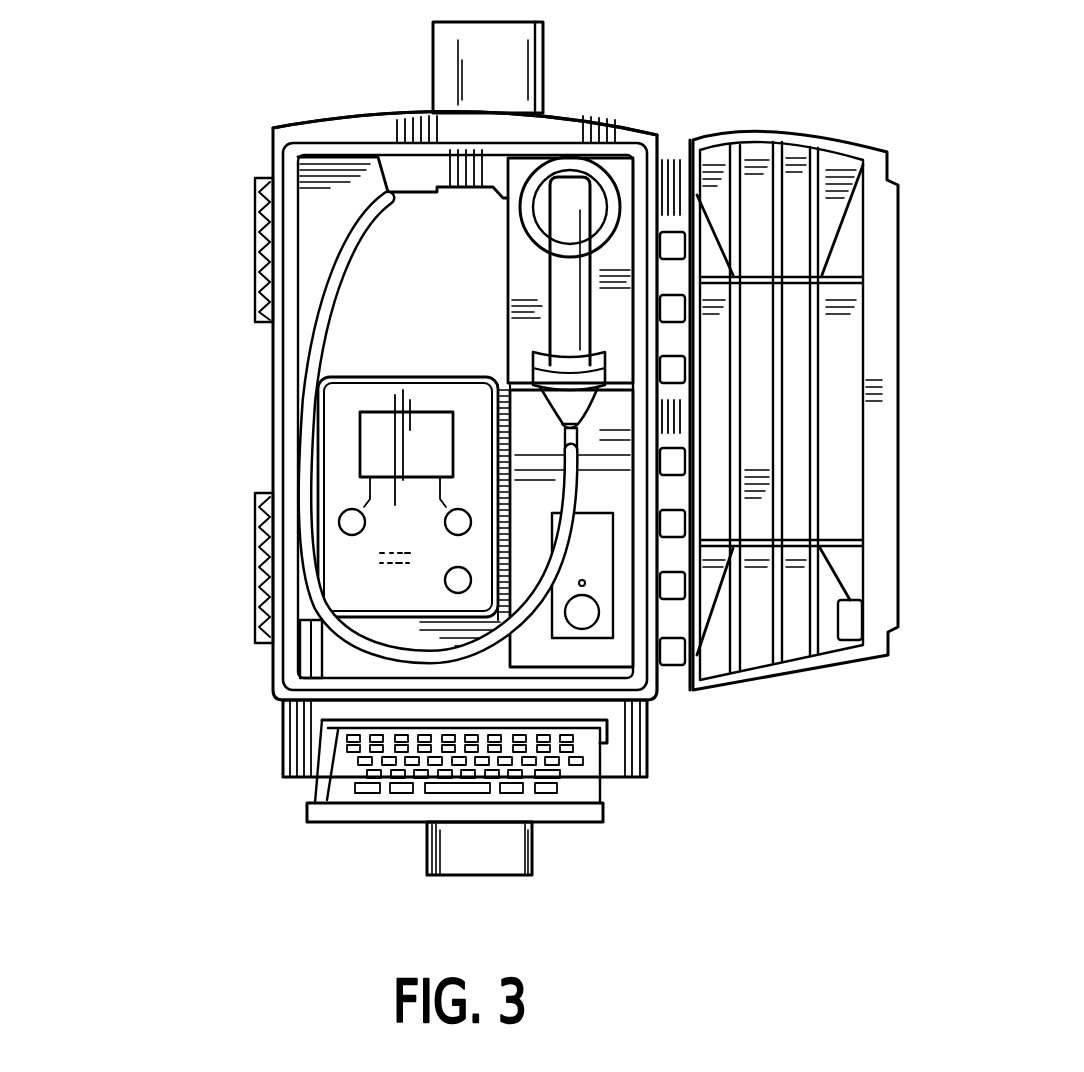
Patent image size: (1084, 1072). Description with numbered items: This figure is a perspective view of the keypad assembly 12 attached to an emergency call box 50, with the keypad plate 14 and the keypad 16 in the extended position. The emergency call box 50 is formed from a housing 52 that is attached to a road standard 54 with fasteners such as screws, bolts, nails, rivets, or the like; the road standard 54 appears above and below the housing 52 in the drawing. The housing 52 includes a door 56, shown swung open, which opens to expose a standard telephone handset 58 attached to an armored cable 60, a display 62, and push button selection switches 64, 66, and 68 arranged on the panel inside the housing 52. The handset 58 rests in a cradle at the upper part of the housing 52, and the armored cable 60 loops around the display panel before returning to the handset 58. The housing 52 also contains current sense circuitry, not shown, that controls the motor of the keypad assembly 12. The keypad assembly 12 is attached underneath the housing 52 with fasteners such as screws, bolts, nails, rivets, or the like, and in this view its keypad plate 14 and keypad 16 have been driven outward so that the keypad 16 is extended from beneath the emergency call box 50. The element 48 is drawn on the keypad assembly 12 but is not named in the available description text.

The keypad assembly 12 is at (262, 740).
The keypad plate 14 is at (590, 812).
The keypad 16 is at (575, 787).
The keyboard housing 48 is at (620, 743).
The emergency call box 50 is at (247, 372).
The housing 52 is at (358, 140).
The road standard 54 is at (445, 50).
The door 56 is at (812, 364).
The telephone handset 58 is at (603, 175).
The armored cable 60 is at (348, 238).
The display 62 is at (358, 436).
The push button selection switch 64 is at (340, 518).
The push button selection switch 66 is at (445, 521).
The push button selection switch 68 is at (445, 581).